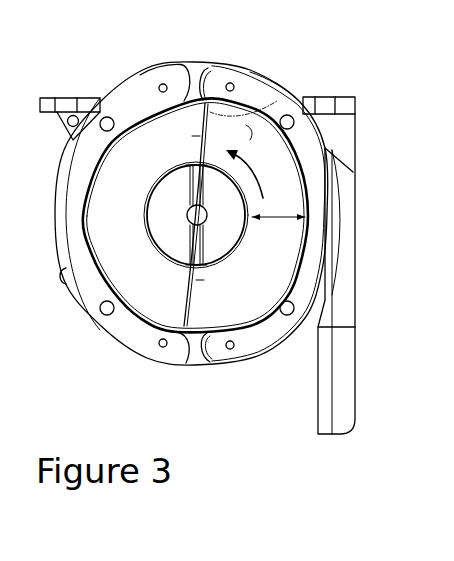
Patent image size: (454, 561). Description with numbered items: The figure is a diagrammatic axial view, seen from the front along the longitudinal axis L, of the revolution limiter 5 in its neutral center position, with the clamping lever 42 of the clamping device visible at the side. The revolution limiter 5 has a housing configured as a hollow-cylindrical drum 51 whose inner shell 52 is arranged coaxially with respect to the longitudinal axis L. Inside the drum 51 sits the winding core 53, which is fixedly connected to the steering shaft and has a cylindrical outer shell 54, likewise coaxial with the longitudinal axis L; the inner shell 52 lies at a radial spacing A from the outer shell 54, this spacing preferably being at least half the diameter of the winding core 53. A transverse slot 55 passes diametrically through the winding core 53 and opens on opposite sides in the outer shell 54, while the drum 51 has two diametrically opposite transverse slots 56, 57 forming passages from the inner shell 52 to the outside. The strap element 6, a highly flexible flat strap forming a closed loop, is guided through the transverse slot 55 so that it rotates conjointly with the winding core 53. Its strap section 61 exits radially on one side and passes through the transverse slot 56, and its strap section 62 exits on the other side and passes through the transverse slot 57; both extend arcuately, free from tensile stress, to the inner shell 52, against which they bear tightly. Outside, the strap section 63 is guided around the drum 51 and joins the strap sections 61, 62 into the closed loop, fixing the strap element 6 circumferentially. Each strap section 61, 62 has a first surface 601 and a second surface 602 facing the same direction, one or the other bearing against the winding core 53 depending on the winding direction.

The revolution limiter 5 is at (259, 62).
The strap element 6 is at (195, 136).
The clamping lever 42 is at (340, 398).
The drum 51 is at (247, 92).
The inner shell 52 is at (250, 302).
The winding core 53 is at (168, 223).
The outer shell 54 is at (150, 190).
The transverse slot 55 is at (188, 194).
The transverse slot 56 is at (192, 77).
The transverse slot 57 is at (193, 355).
The strap section 61 is at (176, 313).
The strap section 62 is at (226, 112).
The strap section 63 is at (272, 82).
The first surface 601 is at (185, 298).
The second surface 602 is at (194, 140).
The radial spacing A is at (285, 218).
The longitudinal axis L is at (205, 220).